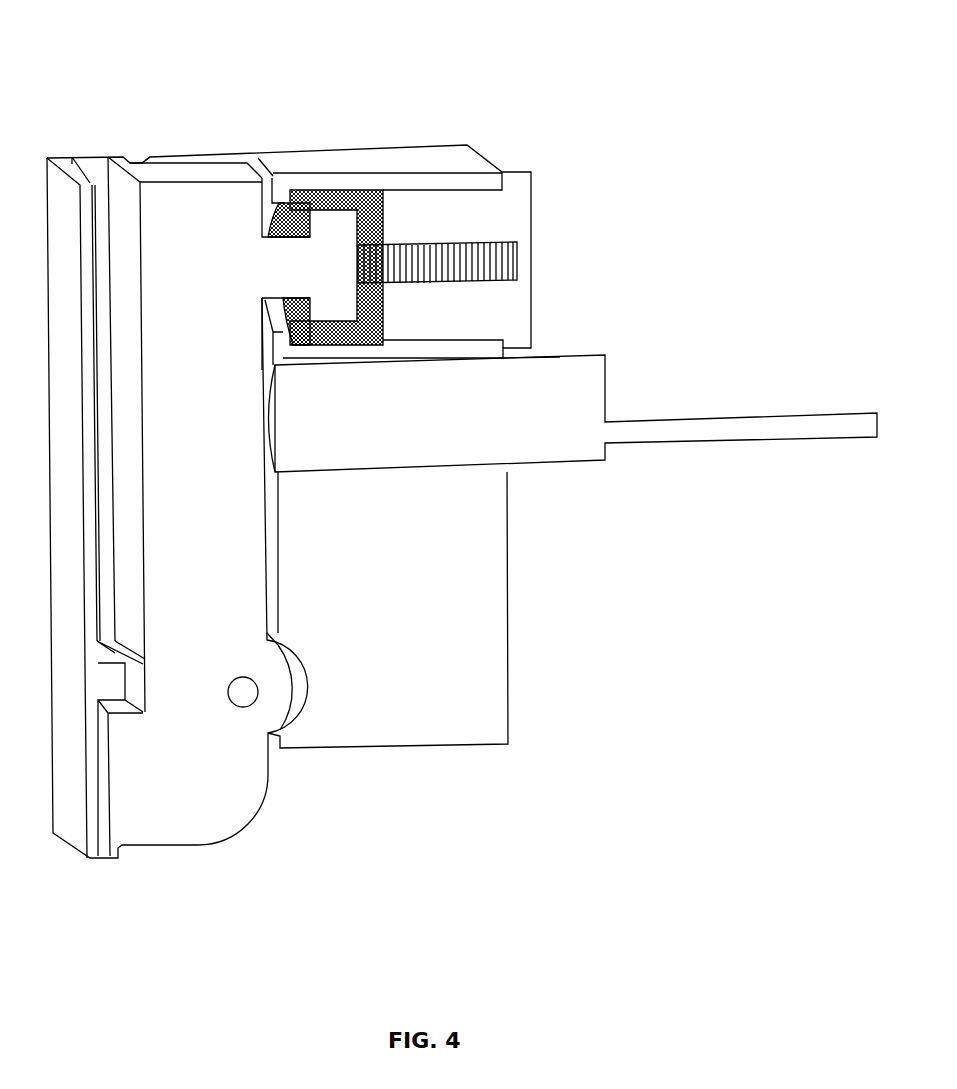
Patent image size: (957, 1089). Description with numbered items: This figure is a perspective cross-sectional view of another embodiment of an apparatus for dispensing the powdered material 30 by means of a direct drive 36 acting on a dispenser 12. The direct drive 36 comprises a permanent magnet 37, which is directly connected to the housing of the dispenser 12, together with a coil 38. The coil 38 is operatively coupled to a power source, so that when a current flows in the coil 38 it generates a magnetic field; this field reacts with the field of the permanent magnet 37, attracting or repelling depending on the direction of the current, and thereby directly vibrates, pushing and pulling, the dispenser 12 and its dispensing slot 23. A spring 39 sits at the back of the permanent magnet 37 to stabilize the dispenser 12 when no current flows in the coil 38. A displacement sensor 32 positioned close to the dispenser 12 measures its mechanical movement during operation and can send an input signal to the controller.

The dispenser 12 is at (254, 783).
The dispensing slot 23 is at (106, 852).
The powdered material 30 is at (449, 100).
The displacement sensor 32 is at (518, 430).
The direct drive 36 is at (279, 268).
The permanent magnet 37 is at (324, 232).
The coil 38 is at (343, 193).
The spring 39 is at (505, 240).